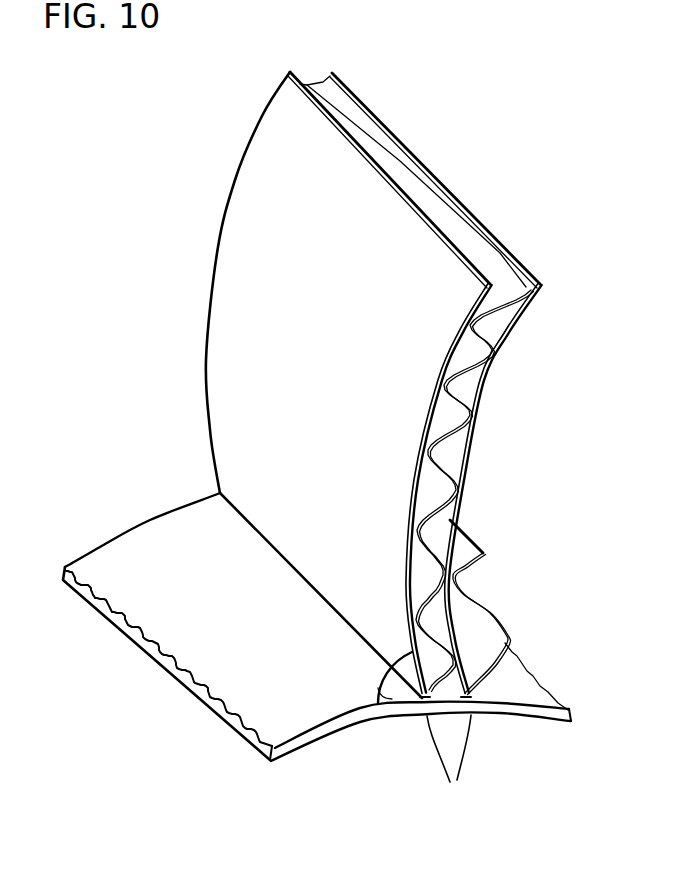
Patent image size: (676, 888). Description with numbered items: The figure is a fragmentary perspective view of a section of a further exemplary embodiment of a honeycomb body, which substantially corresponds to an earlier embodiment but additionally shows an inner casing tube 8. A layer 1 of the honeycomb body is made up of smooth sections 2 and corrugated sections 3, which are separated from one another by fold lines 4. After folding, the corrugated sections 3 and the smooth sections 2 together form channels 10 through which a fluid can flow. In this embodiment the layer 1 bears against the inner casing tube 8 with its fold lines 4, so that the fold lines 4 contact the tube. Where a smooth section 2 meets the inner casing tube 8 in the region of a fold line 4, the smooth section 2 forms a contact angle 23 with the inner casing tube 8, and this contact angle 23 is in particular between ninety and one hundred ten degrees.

The layer 1 is at (228, 248).
The smooth section 2 is at (278, 117).
The corrugated section 3 is at (493, 298).
The fold line 4 is at (449, 762).
The inner casing tube 8 is at (319, 733).
The channel 10 is at (442, 467).
The contact angle 23 is at (392, 702).